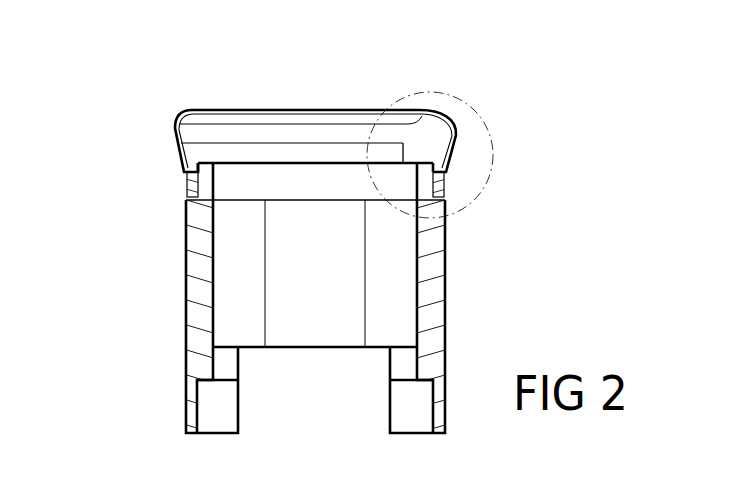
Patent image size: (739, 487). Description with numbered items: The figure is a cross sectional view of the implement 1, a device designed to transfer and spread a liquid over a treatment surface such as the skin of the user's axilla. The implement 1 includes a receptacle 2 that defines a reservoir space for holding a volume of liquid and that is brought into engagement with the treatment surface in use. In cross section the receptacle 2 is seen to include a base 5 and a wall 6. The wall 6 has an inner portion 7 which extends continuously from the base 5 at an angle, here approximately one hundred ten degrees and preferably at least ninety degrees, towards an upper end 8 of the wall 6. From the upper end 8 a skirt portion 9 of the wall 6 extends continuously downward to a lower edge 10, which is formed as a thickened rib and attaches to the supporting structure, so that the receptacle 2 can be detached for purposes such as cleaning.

The implement 1 is at (142, 276).
The receptacle 2 is at (171, 106).
The base 5 is at (313, 158).
The wall 6 is at (463, 108).
The inner portion 7 is at (228, 140).
The upper end 8 is at (440, 105).
The skirt portion 9 is at (462, 131).
The lower edge 10 is at (456, 182).